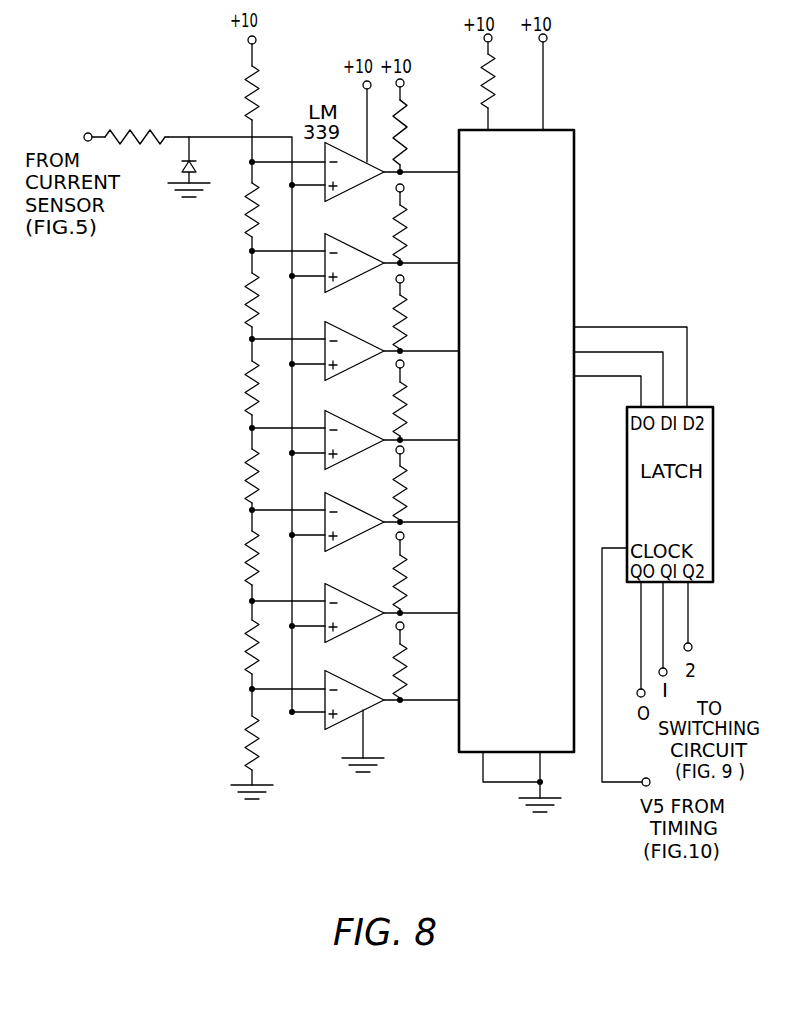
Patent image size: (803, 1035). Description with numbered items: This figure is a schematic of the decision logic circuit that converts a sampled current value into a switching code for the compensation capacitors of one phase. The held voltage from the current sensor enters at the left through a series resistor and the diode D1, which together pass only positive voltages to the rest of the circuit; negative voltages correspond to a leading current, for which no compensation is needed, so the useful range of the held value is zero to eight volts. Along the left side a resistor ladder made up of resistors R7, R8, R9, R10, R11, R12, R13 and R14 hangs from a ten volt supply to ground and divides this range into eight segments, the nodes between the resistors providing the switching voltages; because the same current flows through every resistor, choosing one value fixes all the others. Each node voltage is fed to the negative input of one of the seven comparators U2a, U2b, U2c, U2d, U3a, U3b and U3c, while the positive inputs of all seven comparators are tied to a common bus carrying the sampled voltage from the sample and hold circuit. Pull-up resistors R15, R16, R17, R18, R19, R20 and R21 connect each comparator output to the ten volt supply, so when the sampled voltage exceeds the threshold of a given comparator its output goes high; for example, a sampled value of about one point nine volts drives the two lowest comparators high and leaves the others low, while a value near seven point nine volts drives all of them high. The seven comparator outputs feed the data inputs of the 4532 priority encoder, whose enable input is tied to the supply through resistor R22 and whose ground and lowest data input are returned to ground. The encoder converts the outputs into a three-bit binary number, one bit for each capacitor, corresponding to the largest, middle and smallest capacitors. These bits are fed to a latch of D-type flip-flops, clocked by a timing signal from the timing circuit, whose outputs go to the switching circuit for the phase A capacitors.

The resistor ladder resistor R7 is at (233, 743).
The resistor ladder resistor R8 is at (171, 378).
The resistor ladder resistor R9 is at (233, 558).
The resistor ladder resistor R10 is at (233, 476).
The resistor ladder resistor R11 is at (233, 389).
The resistor ladder resistor R12 is at (233, 301).
The resistor ladder resistor R13 is at (232, 212).
The resistor ladder resistor R14 is at (228, 92).
The comparator output pull-up resistor R15 is at (420, 661).
The comparator output pull-up resistor R16 is at (420, 572).
The comparator output pull-up resistor R17 is at (420, 484).
The comparator output pull-up resistor R18 is at (420, 400).
The comparator output pull-up resistor R19 is at (420, 313).
The comparator output pull-up resistor R20 is at (421, 223).
The comparator output pull-up resistor R21 is at (418, 129).
The encoder enable resistor R22 is at (508, 81).
The diode D1 is at (180, 167).
The comparator U2a is at (354, 722).
The comparator U2b is at (354, 613).
The comparator U2c is at (354, 522).
The comparator U2d is at (354, 440).
The comparator U3a is at (354, 351).
The comparator U3b is at (354, 263).
The comparator U3c is at (354, 172).
The priority encoder 4532 is at (573, 471).